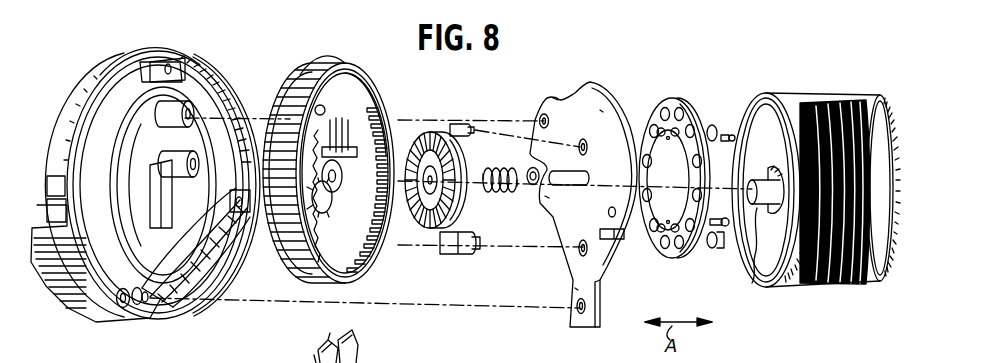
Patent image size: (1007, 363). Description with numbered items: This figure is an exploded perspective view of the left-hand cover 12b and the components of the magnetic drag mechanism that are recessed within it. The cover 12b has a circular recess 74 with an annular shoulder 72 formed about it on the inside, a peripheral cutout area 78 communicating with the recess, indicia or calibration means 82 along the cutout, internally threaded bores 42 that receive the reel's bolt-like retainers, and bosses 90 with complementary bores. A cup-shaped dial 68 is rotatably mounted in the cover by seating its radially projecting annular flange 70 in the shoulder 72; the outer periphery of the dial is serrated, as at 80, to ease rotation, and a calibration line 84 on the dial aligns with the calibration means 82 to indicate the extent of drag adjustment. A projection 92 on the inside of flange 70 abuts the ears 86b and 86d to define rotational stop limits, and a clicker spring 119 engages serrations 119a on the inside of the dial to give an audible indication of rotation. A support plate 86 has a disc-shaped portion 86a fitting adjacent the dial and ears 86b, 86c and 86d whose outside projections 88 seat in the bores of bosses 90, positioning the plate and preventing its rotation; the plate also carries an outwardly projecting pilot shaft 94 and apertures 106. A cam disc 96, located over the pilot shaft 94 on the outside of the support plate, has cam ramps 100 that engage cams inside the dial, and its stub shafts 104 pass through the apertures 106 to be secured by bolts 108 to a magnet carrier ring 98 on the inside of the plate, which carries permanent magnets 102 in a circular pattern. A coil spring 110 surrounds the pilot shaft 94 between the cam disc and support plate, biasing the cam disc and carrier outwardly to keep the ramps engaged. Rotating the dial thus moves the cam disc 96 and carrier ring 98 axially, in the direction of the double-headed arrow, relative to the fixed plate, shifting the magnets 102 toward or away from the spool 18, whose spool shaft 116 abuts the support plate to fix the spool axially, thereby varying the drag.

The left-hand cover 12b is at (193, 64).
The indicia or calibration means 82 is at (58, 112).
The annular shoulder 72 is at (117, 62).
The circular recess 74 is at (128, 186).
The peripheral cutout area 78 is at (63, 203).
The bosses 90 is at (193, 160).
The internally threaded bores 42 is at (168, 60).
The cup-shaped dial 68 is at (336, 63).
The calibration line 84 is at (282, 108).
The serrations 80 is at (306, 68).
The annular flange 70 is at (365, 75).
The serrations 119a is at (372, 272).
The projection 92 is at (325, 110).
The cam ramps 100 is at (456, 132).
The cam disc 96 is at (432, 122).
The stub shafts 104 is at (470, 128).
The coil spring 110 is at (500, 195).
The pilot shaft 94 is at (572, 187).
The support plate 86 is at (590, 80).
The disc-shaped portion 86a is at (600, 112).
The ear 86b is at (556, 98).
The ear 86c is at (548, 196).
The ear 86d is at (577, 288).
The outside projections 88 is at (540, 116).
The apertures 106 is at (585, 140).
The magnet carrier ring 98 is at (680, 108).
The clicker spring 119 is at (630, 262).
The permanent magnets 102 is at (714, 250).
The spool 18 is at (840, 97).
The bolts 108 is at (744, 108).
The spool shaft 116 is at (755, 288).